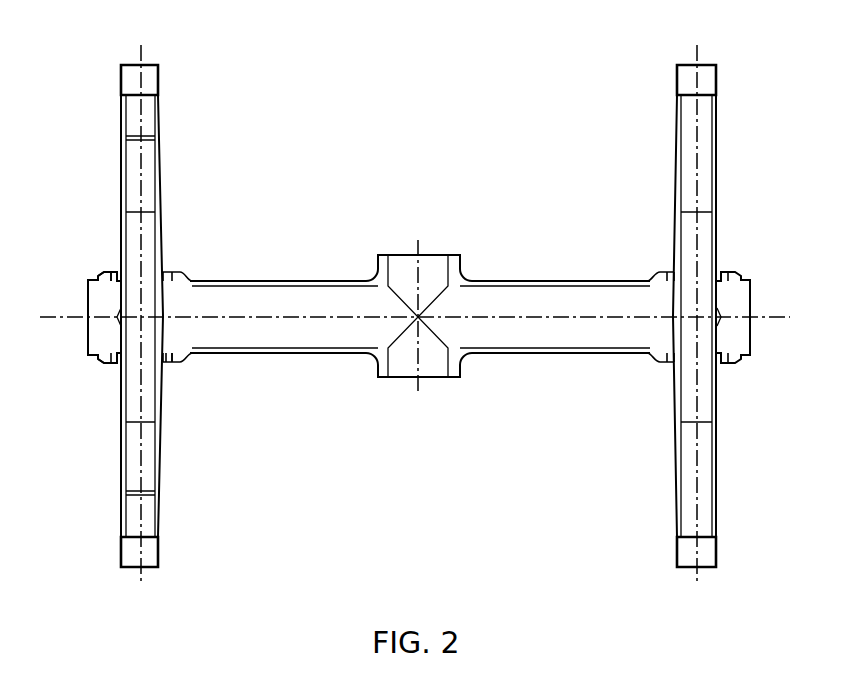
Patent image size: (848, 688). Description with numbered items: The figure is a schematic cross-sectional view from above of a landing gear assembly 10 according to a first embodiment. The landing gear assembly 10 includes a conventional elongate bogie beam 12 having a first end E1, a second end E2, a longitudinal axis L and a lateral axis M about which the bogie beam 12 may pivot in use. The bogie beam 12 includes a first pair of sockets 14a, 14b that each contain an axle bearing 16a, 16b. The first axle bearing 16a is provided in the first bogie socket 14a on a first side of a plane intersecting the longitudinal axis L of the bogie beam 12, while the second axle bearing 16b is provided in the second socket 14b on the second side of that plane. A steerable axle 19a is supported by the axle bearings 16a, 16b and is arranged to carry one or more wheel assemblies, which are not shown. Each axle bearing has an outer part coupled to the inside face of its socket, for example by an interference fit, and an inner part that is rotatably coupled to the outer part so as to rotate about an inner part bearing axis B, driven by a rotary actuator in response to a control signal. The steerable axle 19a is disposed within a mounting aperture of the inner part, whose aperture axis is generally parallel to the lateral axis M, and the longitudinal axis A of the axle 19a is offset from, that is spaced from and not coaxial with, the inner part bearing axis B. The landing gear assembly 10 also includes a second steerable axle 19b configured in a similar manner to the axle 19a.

The landing gear assembly 10 is at (416, 296).
The bogie beam 12 is at (532, 280).
The first bogie socket 14a is at (100, 364).
The second bogie socket 14b is at (178, 271).
The first axle bearing 16a is at (170, 373).
The second axle bearing 16b is at (112, 268).
The steerable axle 19a is at (162, 315).
The second steerable axle 19b is at (677, 477).
The first end E1 is at (84, 303).
The second end E2 is at (742, 298).
The longitudinal axis L is at (307, 317).
The lateral axis M is at (420, 270).
The longitudinal axis of the axle A is at (138, 432).
The inner part bearing axis B is at (143, 400).